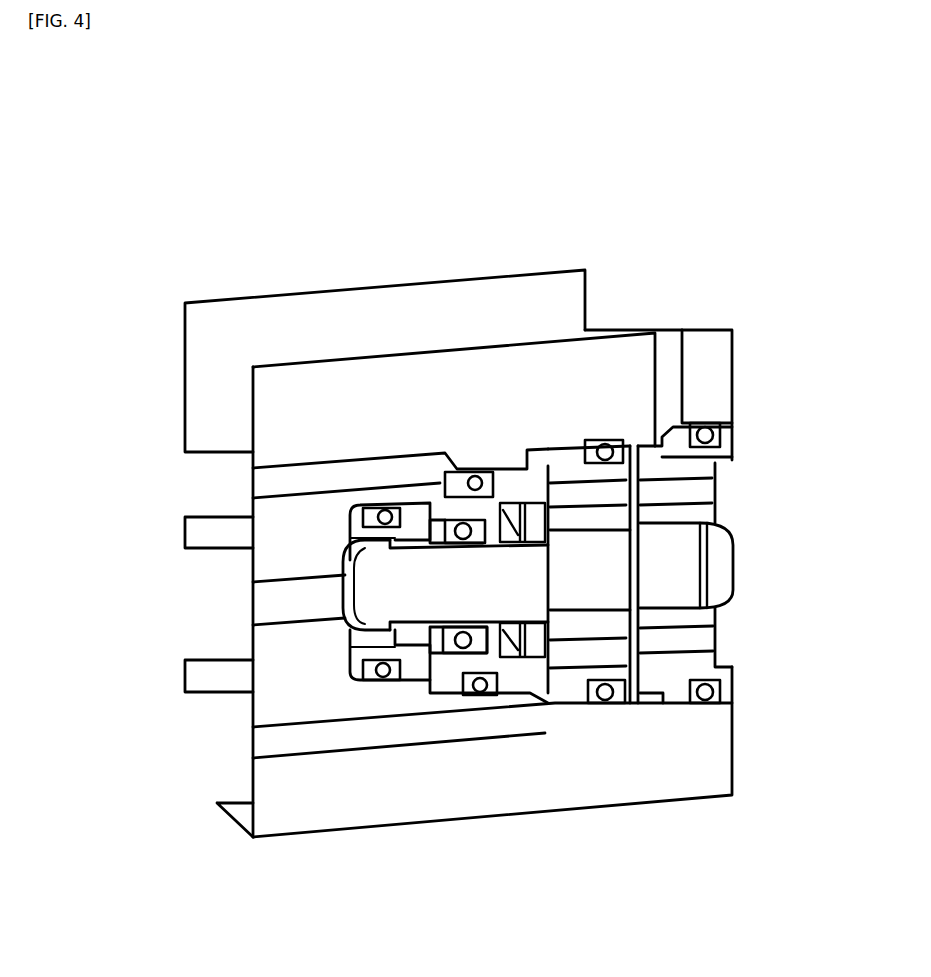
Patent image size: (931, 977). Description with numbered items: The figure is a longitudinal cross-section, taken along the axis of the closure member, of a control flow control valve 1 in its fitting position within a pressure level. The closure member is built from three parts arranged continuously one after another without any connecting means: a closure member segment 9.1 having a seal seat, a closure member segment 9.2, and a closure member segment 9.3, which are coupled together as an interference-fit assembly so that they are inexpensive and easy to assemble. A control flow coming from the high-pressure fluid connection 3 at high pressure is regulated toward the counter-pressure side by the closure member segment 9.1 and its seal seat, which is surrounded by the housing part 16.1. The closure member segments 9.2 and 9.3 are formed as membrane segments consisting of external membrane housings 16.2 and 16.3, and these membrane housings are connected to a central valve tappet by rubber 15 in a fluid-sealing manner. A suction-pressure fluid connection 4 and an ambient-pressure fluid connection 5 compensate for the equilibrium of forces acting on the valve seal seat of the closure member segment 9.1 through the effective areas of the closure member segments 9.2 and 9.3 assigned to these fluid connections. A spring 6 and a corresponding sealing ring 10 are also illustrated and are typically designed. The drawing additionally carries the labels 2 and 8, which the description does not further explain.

The control flow control valve 1 is at (390, 217).
The rear housing plate 2 is at (208, 478).
The high-pressure fluid connection 3 is at (228, 603).
The suction-pressure fluid connection 4 is at (232, 740).
The ambient-pressure fluid connection 5 is at (667, 360).
The spring 6 is at (507, 518).
The lower housing body 8 is at (612, 765).
The closure member segment having a seal seat 9.1 is at (433, 587).
The closure member segment 9.2 is at (583, 585).
The closure member segment 9.3 is at (682, 562).
The sealing ring 10 is at (465, 533).
The rubber 15 is at (697, 635).
The housing part 16.1 is at (427, 663).
The external membrane housing 16.2 is at (578, 683).
The external membrane housing 16.3 is at (675, 712).